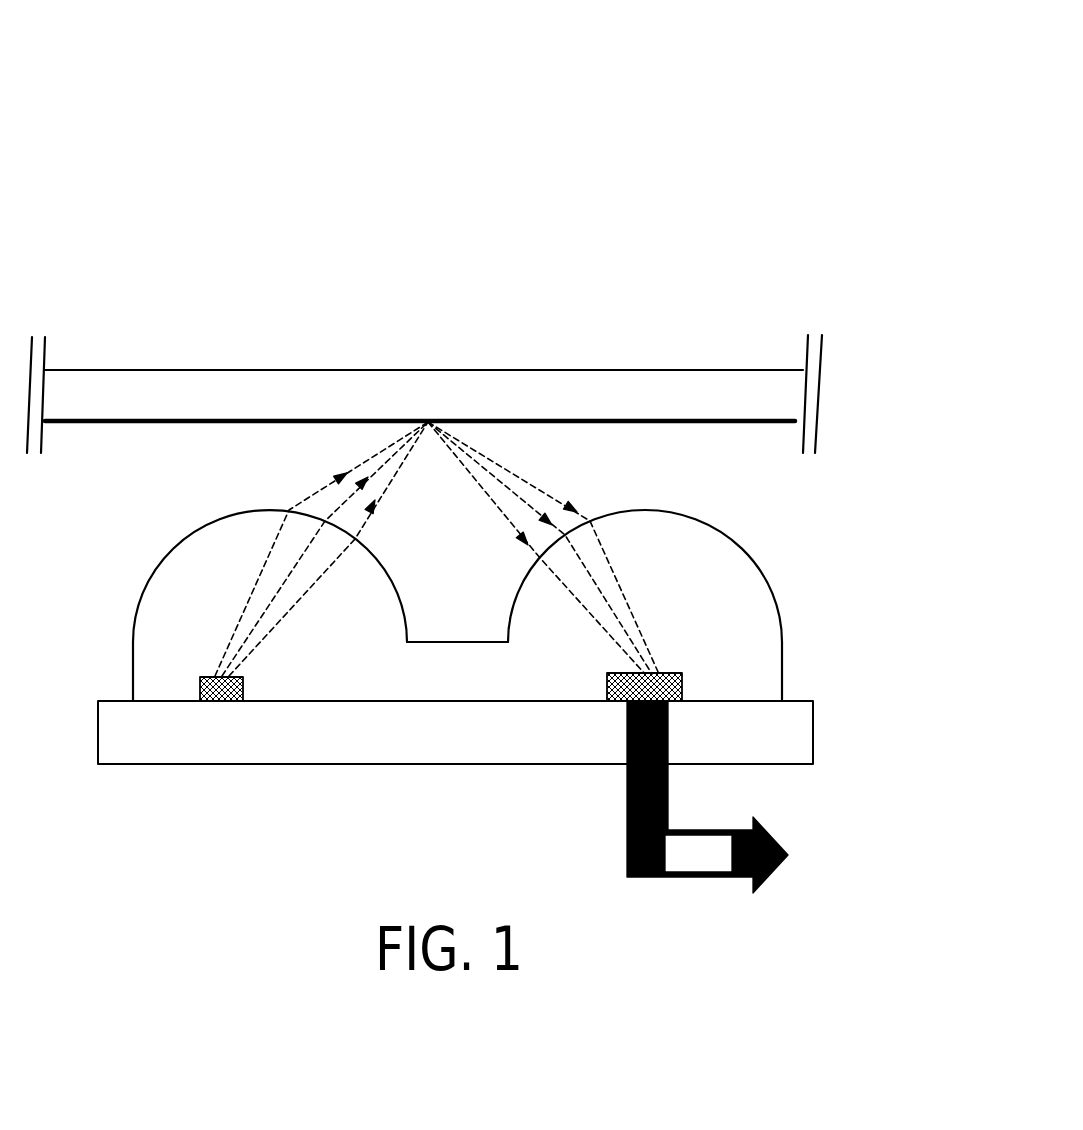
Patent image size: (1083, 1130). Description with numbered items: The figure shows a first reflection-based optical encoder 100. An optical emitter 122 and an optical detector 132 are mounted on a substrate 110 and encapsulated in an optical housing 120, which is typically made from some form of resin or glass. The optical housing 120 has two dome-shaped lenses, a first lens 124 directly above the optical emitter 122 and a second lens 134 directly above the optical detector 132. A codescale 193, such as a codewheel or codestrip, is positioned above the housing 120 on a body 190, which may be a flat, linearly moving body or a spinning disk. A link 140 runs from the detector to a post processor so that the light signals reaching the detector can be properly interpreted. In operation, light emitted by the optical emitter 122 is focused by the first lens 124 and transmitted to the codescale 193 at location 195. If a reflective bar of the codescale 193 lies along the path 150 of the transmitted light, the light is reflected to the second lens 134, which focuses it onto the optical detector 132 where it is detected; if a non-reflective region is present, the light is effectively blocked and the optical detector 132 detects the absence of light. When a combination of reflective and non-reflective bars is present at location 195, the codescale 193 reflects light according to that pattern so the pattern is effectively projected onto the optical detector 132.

The reflection-based optical encoder 100 is at (608, 160).
The substrate 110 is at (455, 732).
The optical housing 120 is at (474, 582).
The optical emitter 122 is at (208, 668).
The first lens 124 is at (178, 538).
The optical detector 132 is at (668, 662).
The second lens 134 is at (723, 531).
The link 140 is at (782, 797).
The path of the transmitted light 150 is at (475, 490).
The body 190 is at (424, 388).
The codescale 193 is at (298, 428).
The location 195 is at (428, 412).